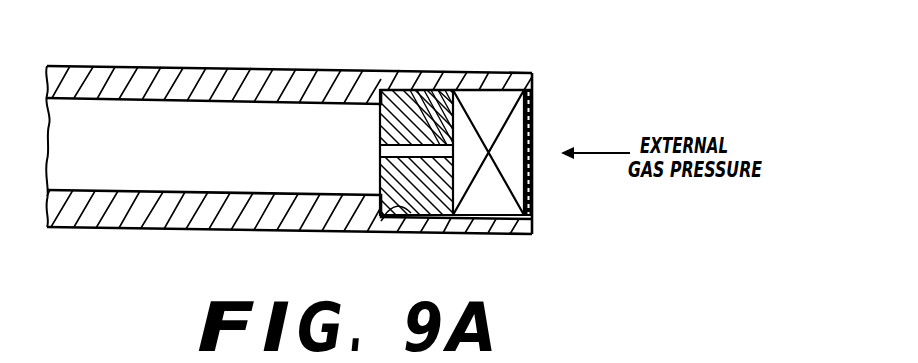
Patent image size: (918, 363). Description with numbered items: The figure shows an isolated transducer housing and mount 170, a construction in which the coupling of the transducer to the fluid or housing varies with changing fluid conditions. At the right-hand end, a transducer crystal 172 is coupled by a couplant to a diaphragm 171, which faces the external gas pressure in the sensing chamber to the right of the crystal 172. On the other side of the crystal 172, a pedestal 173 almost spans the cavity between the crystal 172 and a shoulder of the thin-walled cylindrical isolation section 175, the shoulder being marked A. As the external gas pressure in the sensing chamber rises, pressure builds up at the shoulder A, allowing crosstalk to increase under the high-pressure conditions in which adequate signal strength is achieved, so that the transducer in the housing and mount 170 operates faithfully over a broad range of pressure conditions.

The thin-walled cylindrical isolation section 175 is at (170, 67).
The pedestal 173 is at (413, 96).
The diaphragm 171 is at (502, 110).
The transducer crystal 172 is at (533, 78).
The isolated transducer housing and mount 170 is at (511, 53).
The shoulder A is at (410, 212).